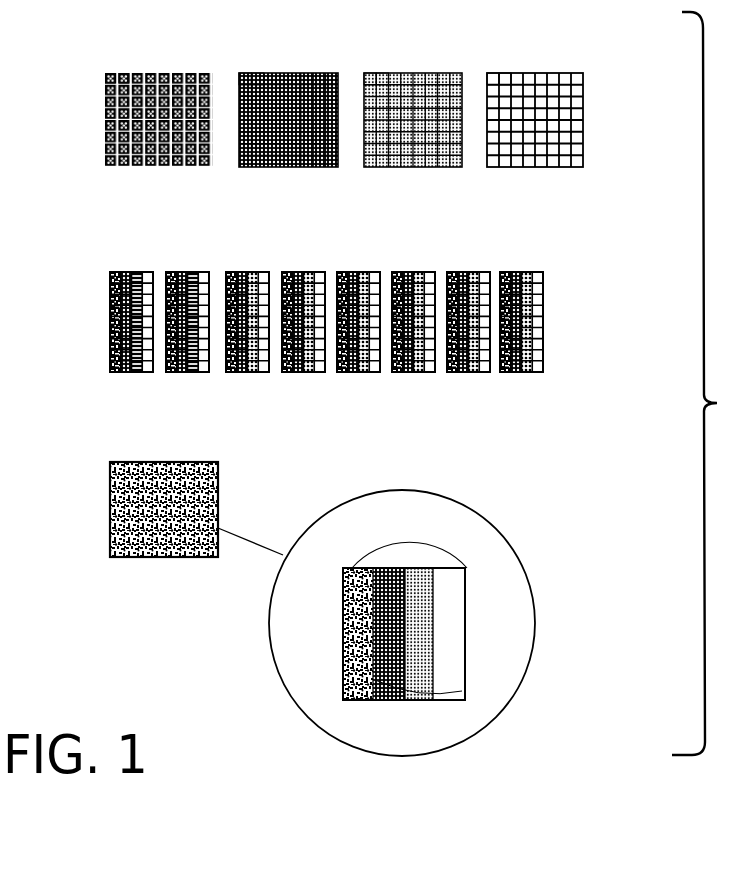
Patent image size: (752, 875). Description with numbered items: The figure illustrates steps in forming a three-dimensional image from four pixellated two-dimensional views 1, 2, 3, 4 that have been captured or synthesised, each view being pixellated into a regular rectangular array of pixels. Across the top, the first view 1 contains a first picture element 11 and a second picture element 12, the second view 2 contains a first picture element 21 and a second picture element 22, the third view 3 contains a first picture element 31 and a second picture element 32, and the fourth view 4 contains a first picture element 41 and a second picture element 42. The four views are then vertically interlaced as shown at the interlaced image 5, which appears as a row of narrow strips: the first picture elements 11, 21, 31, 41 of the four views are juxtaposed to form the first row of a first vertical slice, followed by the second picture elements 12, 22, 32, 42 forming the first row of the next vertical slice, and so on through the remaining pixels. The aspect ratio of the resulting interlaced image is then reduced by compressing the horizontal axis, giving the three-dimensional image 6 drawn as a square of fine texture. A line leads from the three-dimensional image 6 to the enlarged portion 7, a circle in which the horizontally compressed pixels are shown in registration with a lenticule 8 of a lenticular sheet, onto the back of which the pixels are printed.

The first pixellated 2D view 1 is at (155, 68).
The first picture element of the first view 11 is at (112, 75).
The second picture element of the first view 12 is at (126, 75).
The second pixellated 2D view 2 is at (288, 67).
The first picture element of the second view 21 is at (247, 75).
The second picture element of the second view 22 is at (257, 75).
The third pixellated 2D view 3 is at (427, 65).
The first picture element of the third view 31 is at (370, 77).
The second picture element of the third view 32 is at (383, 78).
The fourth pixellated 2D view 4 is at (534, 67).
The first picture element of the fourth view 41 is at (495, 78).
The second picture element of the fourth view 42 is at (505, 80).
The vertically interlaced image 5 is at (575, 313).
The 3D image 6 is at (226, 476).
The enlarged portion 7 is at (500, 532).
The lenticule 8 is at (405, 557).